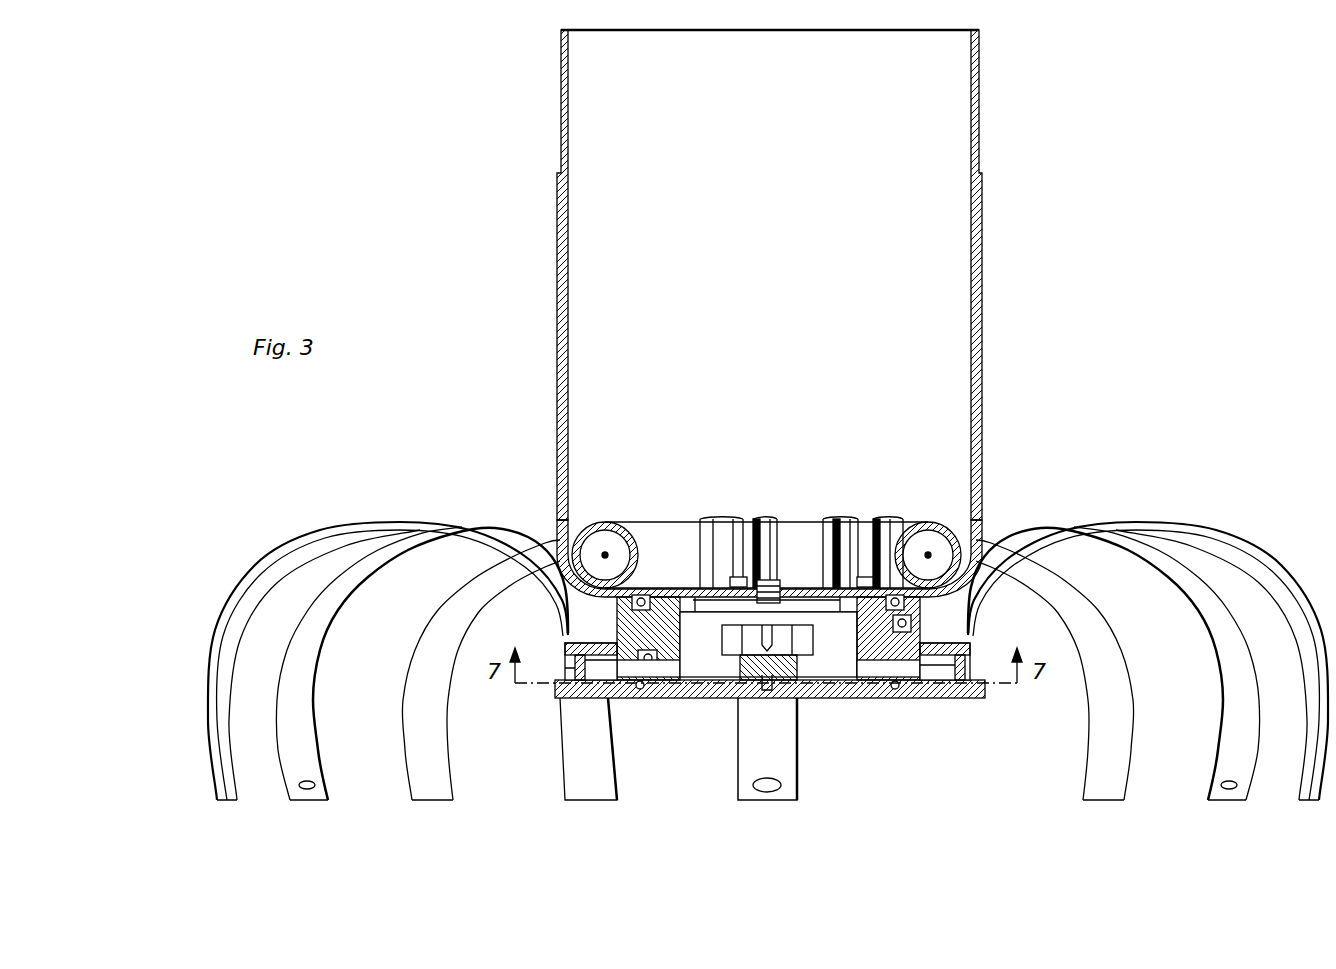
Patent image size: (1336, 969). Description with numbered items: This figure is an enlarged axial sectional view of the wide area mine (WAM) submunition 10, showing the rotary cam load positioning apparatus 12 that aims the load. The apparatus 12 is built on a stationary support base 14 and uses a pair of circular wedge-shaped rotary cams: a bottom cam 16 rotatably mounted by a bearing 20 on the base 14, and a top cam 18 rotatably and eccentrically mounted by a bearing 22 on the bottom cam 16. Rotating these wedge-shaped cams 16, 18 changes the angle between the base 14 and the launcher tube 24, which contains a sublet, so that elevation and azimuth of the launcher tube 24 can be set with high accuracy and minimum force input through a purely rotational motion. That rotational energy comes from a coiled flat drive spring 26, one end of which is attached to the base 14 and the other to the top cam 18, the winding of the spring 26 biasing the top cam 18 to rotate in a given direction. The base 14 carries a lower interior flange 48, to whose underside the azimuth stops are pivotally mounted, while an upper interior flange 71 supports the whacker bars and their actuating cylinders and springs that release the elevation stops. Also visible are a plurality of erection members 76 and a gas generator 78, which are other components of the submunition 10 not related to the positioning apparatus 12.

The WAM submunition 10 is at (1053, 293).
The rotary cam load positioning apparatus 12 is at (930, 630).
The stationary support base 14 is at (932, 700).
The bottom rotary cam 16 is at (923, 700).
The top rotary cam 18 is at (806, 612).
The bearing 20 is at (633, 700).
The bearing 22 is at (687, 700).
The launcher tube 24 is at (979, 358).
The coiled flat drive spring 26 is at (812, 700).
The lower interior flange 48 is at (590, 700).
The upper interior flange 71 is at (560, 665).
The erection members 76 is at (428, 657).
The gas generator 78 is at (653, 520).